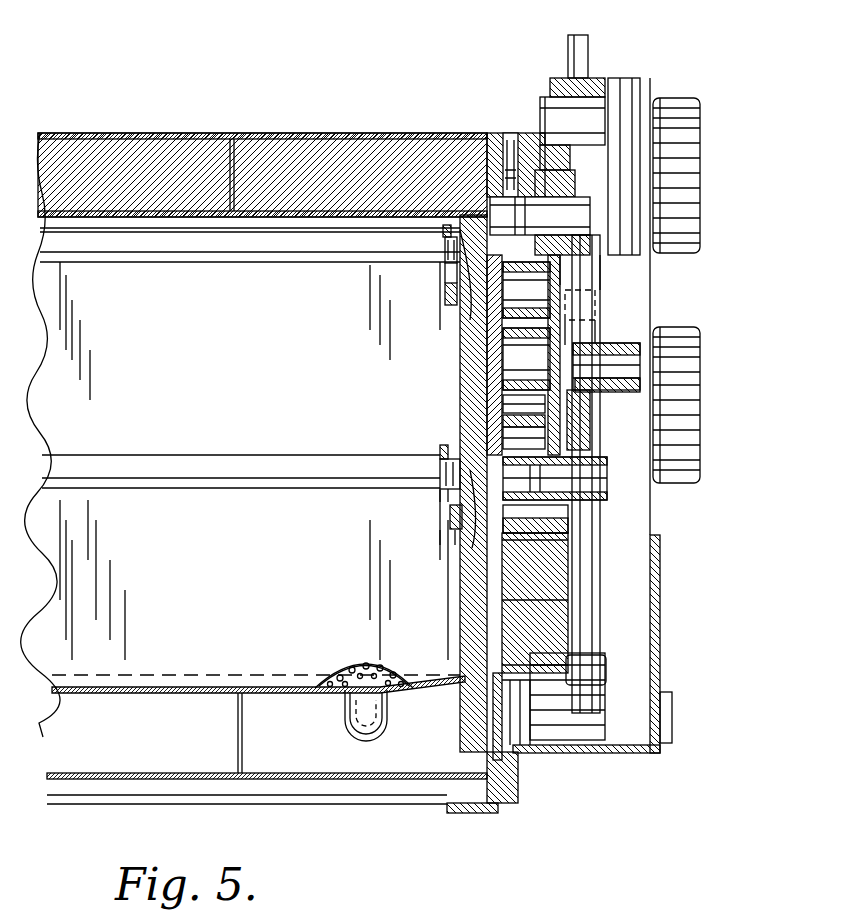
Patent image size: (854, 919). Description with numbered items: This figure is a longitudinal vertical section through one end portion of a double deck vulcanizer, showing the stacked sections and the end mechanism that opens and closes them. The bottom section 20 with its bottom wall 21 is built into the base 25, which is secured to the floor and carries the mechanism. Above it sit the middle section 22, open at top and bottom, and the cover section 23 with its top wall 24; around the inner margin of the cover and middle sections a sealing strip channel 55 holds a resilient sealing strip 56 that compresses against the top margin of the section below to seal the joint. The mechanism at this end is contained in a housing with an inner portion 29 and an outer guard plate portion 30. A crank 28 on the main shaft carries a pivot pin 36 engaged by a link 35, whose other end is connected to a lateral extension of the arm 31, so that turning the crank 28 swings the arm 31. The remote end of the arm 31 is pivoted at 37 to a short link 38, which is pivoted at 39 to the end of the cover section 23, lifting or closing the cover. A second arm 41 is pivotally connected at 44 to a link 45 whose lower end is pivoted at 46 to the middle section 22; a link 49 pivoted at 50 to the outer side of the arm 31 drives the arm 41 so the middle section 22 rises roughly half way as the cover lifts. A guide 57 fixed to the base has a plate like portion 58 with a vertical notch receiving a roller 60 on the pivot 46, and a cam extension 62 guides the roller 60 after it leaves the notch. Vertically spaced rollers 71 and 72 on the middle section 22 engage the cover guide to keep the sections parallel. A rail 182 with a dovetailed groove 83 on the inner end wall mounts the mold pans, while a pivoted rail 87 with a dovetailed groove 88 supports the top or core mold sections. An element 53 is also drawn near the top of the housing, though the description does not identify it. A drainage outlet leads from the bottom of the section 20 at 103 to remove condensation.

The bottom section 20 is at (116, 600).
The bottom wall 21 is at (160, 675).
The middle section 22 is at (124, 352).
The cover section 23 is at (255, 133).
The top wall 24 is at (175, 218).
The base 25 is at (455, 812).
The crank 28 is at (558, 742).
The inner portion 29 is at (485, 562).
The outer guard plate portion 30 is at (660, 626).
The arm 31 is at (588, 48).
The link 35 is at (600, 566).
The pivot pin 36 is at (612, 683).
The pivot 37 is at (535, 125).
The short link 38 is at (545, 95).
The pivot 39 is at (540, 212).
The arm 41 is at (595, 437).
The pivot 44 is at (635, 372).
The link 45 is at (590, 425).
The pivot 46 is at (598, 478).
The link 49 is at (625, 282).
The pivot 50 is at (648, 95).
The pin 53 is at (492, 165).
The sealing strip channel 55 is at (465, 425).
The sealing strip 56 is at (462, 322).
The guide 57 is at (565, 623).
The plate like portion 58 is at (565, 508).
The roller 60 is at (598, 450).
The cam extension 62 is at (480, 398).
The roller 71 is at (526, 290).
The roller 72 is at (526, 359).
The dovetailed groove 83 is at (445, 292).
The rail 87 is at (440, 490).
The dovetailed groove 88 is at (445, 262).
The drainage outlet lead 103 is at (350, 736).
The rail 182 is at (447, 310).